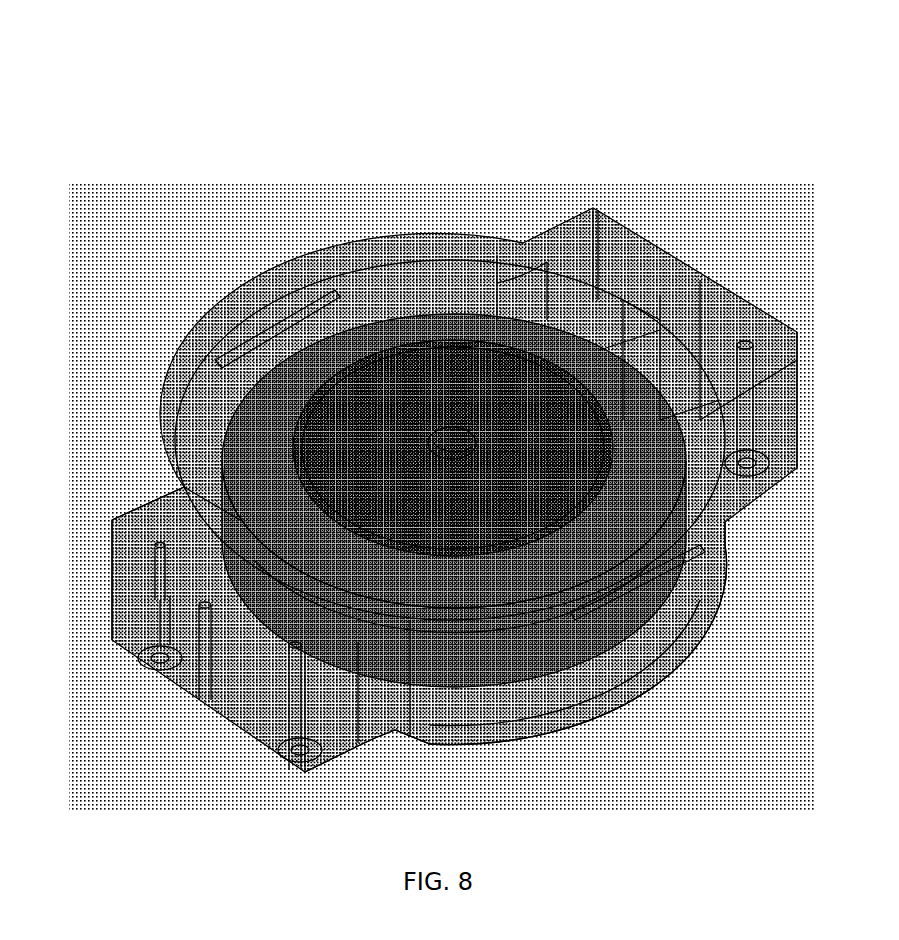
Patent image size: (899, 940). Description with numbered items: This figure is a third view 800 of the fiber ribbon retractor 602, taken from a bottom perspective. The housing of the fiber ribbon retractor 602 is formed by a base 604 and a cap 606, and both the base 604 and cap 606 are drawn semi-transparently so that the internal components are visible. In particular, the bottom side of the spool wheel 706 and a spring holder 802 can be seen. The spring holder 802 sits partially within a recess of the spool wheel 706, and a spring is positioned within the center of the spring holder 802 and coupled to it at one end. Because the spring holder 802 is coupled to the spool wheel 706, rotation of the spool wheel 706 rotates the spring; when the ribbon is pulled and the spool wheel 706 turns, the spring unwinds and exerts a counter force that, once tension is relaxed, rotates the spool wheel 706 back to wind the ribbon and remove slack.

The third view 800 is at (417, 417).
The fiber ribbon retractor 602 is at (164, 268).
The base 604 is at (433, 748).
The cap 606 is at (440, 250).
The spool wheel 706 is at (371, 333).
The spring holder 802 is at (435, 370).